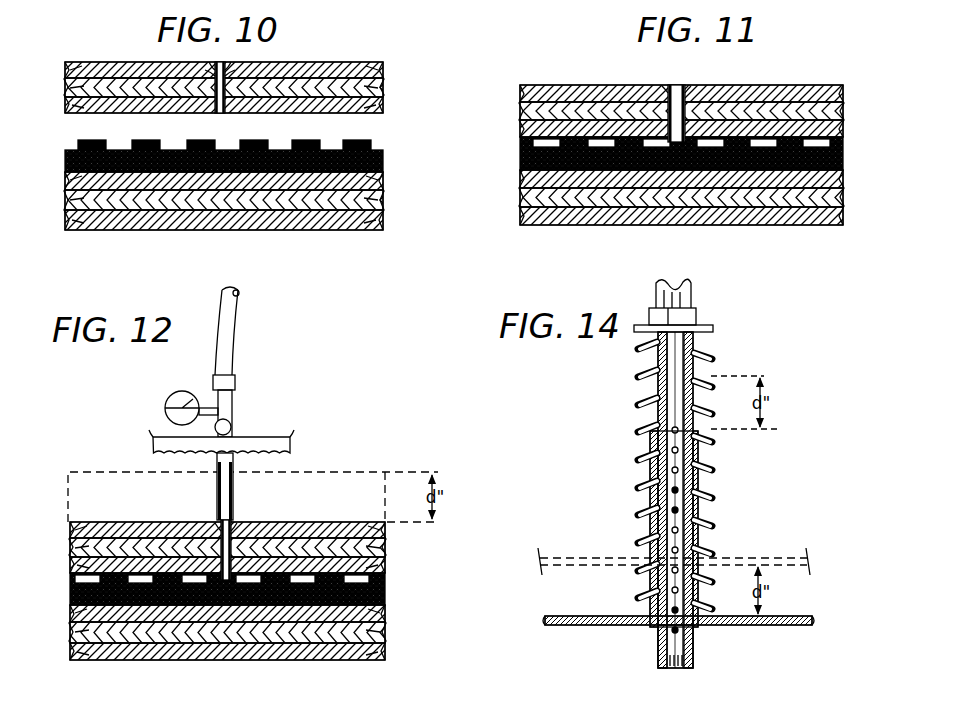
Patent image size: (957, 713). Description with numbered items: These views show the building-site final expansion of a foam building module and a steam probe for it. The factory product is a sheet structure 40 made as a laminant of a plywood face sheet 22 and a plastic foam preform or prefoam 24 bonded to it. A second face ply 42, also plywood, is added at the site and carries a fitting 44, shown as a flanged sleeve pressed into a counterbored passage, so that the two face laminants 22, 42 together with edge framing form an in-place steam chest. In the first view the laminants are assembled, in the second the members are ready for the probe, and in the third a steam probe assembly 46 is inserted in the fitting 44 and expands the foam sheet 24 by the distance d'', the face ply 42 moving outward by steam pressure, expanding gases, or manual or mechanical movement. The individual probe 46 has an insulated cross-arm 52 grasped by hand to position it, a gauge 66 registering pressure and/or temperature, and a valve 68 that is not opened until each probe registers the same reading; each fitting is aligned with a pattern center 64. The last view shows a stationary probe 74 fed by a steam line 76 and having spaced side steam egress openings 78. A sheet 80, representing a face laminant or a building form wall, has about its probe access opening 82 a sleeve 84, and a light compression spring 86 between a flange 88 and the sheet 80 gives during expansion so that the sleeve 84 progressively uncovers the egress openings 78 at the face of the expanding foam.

In FIG. 10, the plywood face sheet 22 is at (338, 222).
In FIG. 11, the plywood face sheet 22 is at (750, 215).
In FIG. 12, the plywood face sheet 22 is at (327, 655).
In FIG. 10, the plastic foam preform or prefoam 24 is at (370, 143).
In FIG. 11, the plastic foam preform or prefoam 24 is at (838, 148).
In FIG. 12, the plastic foam preform or prefoam 24 is at (388, 592).
In FIG. 10, the sheet structure 40 is at (261, 144).
In FIG. 11, the sheet structure 40 is at (700, 148).
In FIG. 12, the sheet structure 40 is at (245, 604).
In FIG. 10, the second face ply 42 is at (315, 64).
In FIG. 11, the second face ply 42 is at (803, 96).
In FIG. 12, the second face ply 42 is at (80, 546).
In FIG. 10, the fitting 44 is at (247, 77).
In FIG. 11, the fitting 44 is at (662, 95).
In FIG. 12, the fitting 44 is at (255, 523).
In FIG. 12, the steam probe assembly 46 is at (233, 370).
In FIG. 12, the insulated cross-arm 52 is at (156, 437).
In FIG. 12, the center 64 is at (340, 708).
In FIG. 12, the gauge 66 is at (177, 391).
In FIG. 12, the valve 68 is at (233, 421).
In FIG. 14, the stationary probe 74 is at (660, 386).
In FIG. 14, the line 76 is at (681, 296).
In FIG. 14, the side steam egress openings 78 is at (680, 541).
In FIG. 14, the sheet 80 is at (776, 562).
In FIG. 14, the probe access opening 82 is at (657, 626).
In FIG. 14, the sleeve 84 is at (652, 502).
In FIG. 14, the light compression spring 86 is at (637, 351).
In FIG. 14, the flange 88 is at (700, 325).